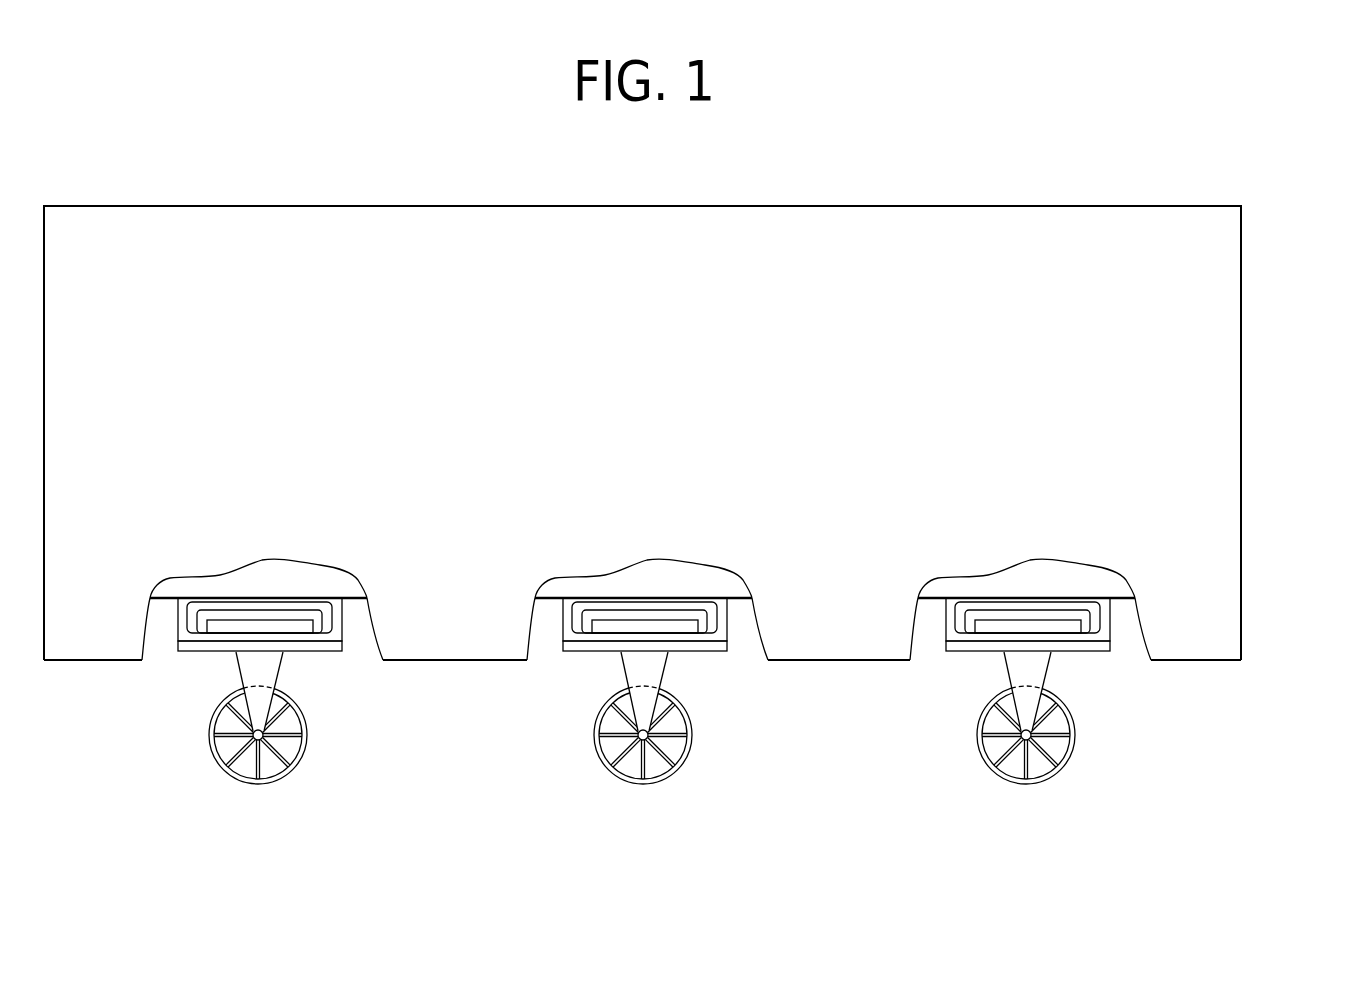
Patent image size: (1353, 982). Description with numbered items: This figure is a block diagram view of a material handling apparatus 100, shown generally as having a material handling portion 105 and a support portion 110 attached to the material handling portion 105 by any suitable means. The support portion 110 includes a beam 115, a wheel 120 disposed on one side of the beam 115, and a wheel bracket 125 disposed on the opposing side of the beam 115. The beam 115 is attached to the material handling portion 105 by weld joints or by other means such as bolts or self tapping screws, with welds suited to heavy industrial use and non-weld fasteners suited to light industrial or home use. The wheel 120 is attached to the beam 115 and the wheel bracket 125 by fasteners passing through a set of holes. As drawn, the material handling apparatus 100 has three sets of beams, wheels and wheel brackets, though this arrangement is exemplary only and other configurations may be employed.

The material handling apparatus 100 is at (1116, 140).
The material handling portion 105 is at (1246, 330).
The support portion 110 is at (643, 636).
The beam 115 is at (177, 616).
The wheel 120 is at (225, 773).
The wheel bracket 125 is at (247, 613).